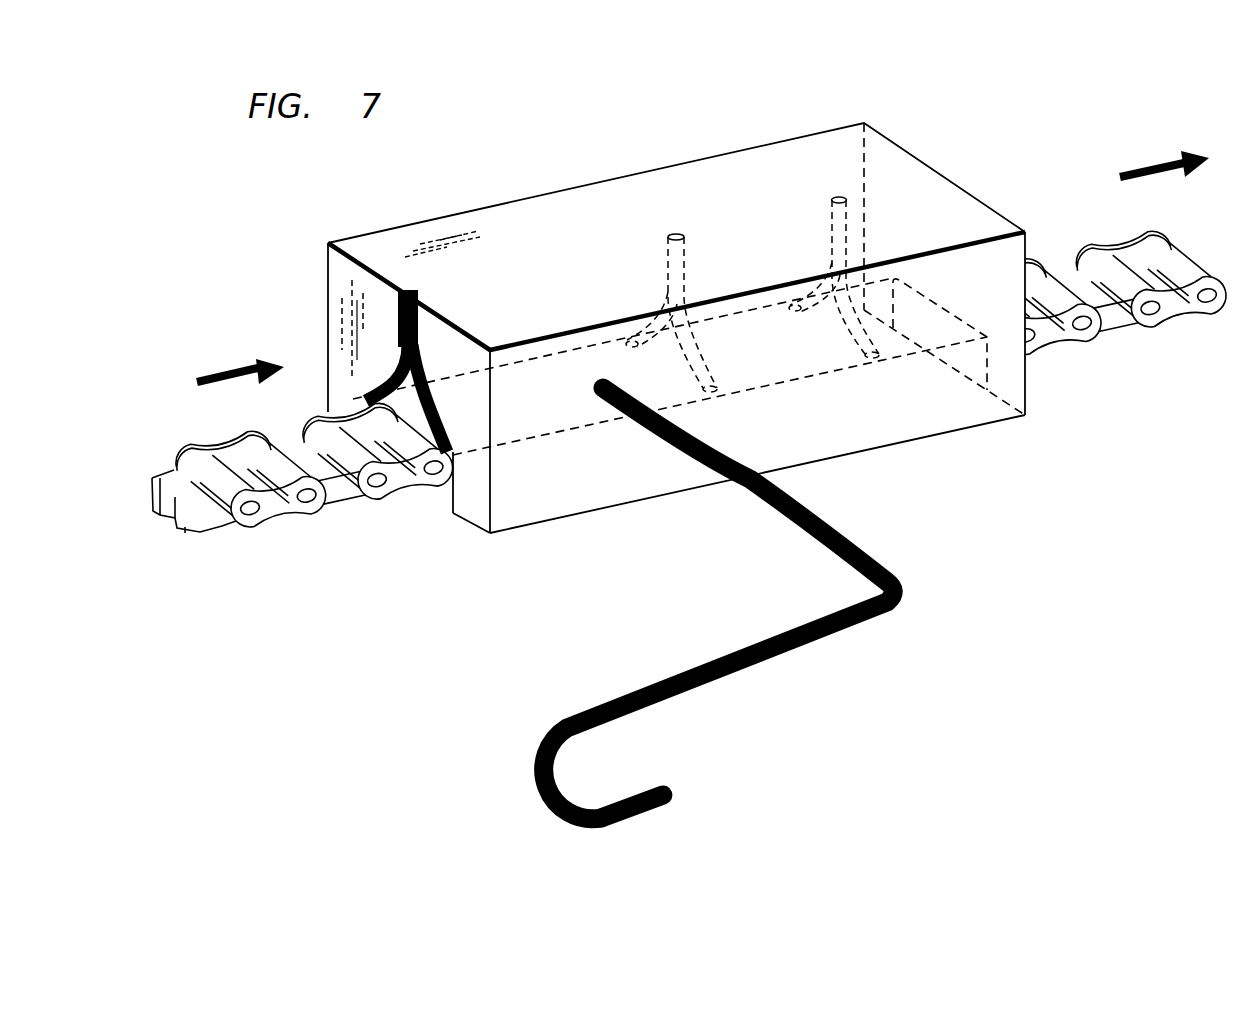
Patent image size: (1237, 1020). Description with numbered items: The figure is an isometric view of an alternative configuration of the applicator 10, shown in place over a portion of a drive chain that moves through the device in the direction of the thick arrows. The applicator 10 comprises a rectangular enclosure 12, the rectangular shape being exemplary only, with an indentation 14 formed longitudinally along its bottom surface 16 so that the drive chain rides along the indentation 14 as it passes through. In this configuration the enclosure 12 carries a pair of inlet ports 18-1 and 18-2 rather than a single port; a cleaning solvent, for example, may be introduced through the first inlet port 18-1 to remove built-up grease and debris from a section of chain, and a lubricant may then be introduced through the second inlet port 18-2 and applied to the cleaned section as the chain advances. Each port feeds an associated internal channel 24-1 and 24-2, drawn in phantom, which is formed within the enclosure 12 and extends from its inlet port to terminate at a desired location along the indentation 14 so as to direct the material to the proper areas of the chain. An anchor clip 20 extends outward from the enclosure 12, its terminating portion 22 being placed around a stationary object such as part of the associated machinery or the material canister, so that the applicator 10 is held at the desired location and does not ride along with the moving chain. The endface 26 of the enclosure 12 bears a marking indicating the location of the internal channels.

The applicator 10 is at (1096, 116).
The enclosure 12 is at (522, 212).
The indentation 14 is at (425, 509).
The bottom surface 16 is at (467, 523).
The first inlet port 18-1 is at (677, 235).
The second inlet port 18-2 is at (836, 199).
The anchor clip 20 is at (858, 548).
The terminating portion 22 is at (673, 796).
The first internal channel 24-1 is at (662, 291).
The second internal channel 24-2 is at (822, 257).
The endface 26 is at (340, 292).